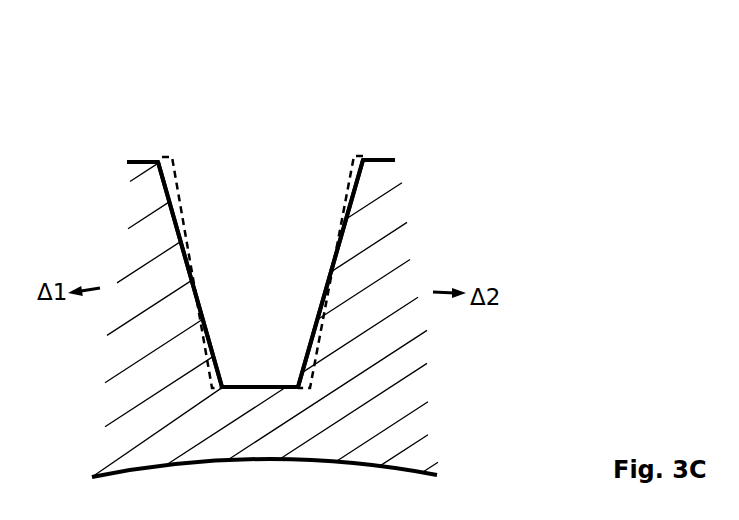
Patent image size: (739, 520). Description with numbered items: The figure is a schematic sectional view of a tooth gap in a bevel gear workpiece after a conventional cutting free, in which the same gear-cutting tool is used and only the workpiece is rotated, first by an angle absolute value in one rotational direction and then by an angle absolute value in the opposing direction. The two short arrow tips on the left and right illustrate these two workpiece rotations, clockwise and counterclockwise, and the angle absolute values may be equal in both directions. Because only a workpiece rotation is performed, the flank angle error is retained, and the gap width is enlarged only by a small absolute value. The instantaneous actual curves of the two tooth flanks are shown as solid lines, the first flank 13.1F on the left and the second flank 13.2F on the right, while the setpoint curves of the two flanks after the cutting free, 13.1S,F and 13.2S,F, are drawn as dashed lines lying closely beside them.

The actual curve of the first tooth flank after cutting free 13.1F is at (172, 158).
The setpoint curve of the first tooth flank after cutting free 13.1S,F is at (182, 218).
The actual curve of the second tooth flank after cutting free 13.2F is at (355, 155).
The setpoint curve of the second tooth flank after cutting free 13.2S,F is at (335, 240).